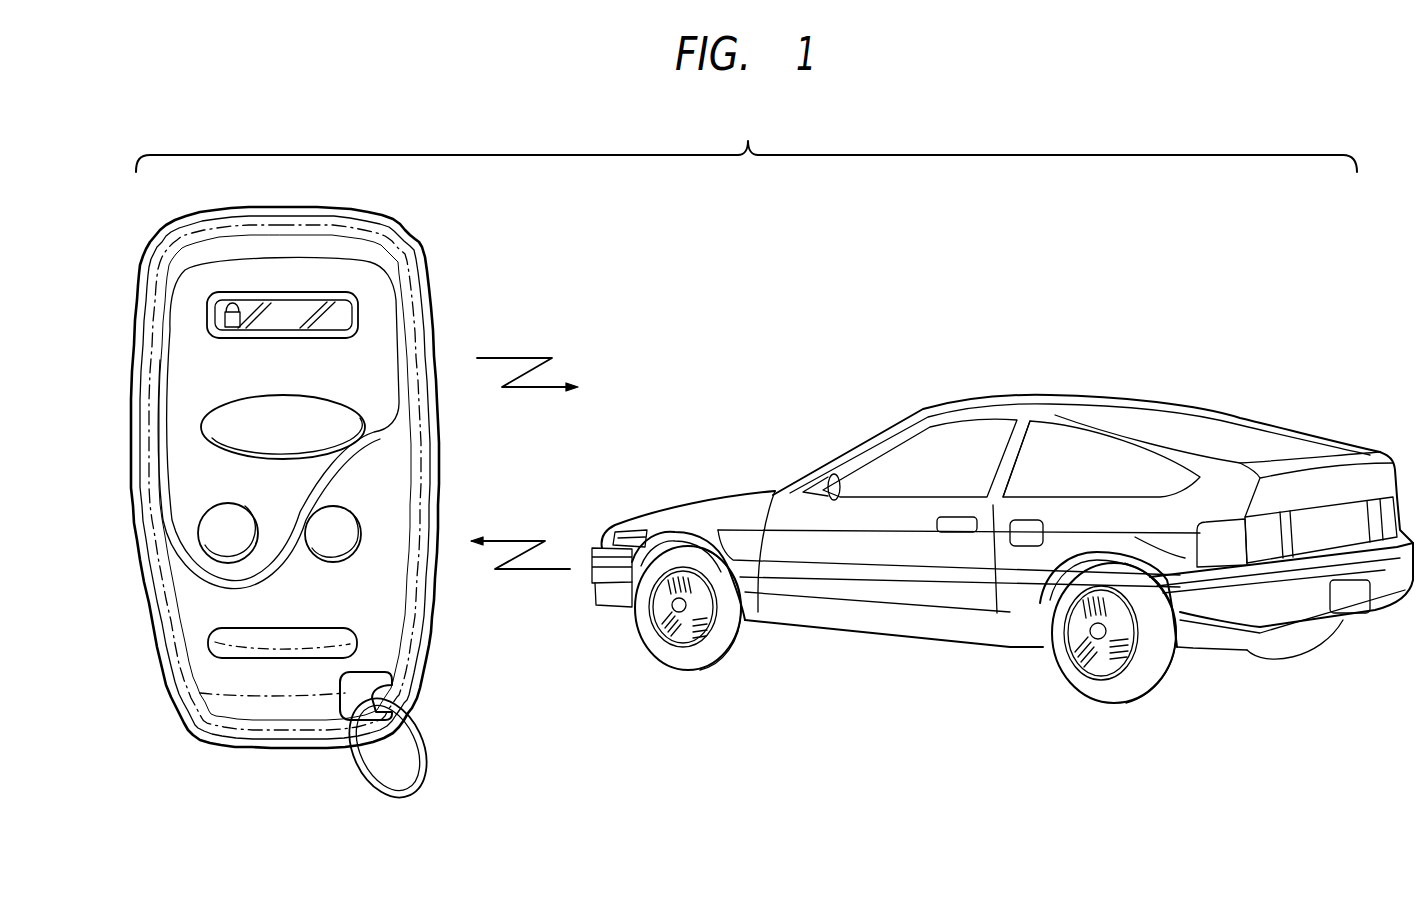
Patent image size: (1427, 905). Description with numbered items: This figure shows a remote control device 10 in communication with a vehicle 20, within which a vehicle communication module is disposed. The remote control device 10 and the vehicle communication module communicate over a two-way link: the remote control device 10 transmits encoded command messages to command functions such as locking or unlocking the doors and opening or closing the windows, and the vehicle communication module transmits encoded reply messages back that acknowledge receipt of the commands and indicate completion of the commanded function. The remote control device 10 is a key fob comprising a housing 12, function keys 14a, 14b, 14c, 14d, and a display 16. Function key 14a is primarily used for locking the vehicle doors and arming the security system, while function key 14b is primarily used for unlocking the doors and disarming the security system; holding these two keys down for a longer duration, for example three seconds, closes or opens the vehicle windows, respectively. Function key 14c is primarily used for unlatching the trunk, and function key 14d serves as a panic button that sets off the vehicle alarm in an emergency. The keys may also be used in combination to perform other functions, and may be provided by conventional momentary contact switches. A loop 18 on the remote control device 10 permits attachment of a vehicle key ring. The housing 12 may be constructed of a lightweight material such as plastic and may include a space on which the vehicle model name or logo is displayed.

The remote control device 10 is at (296, 498).
The housing 12 is at (422, 632).
The function key 14a is at (343, 437).
The function key 14b is at (210, 517).
The function key 14c is at (353, 541).
The function key 14d is at (238, 648).
The display 16 is at (362, 315).
The loop 18 is at (374, 683).
The vehicle 20 is at (1033, 398).